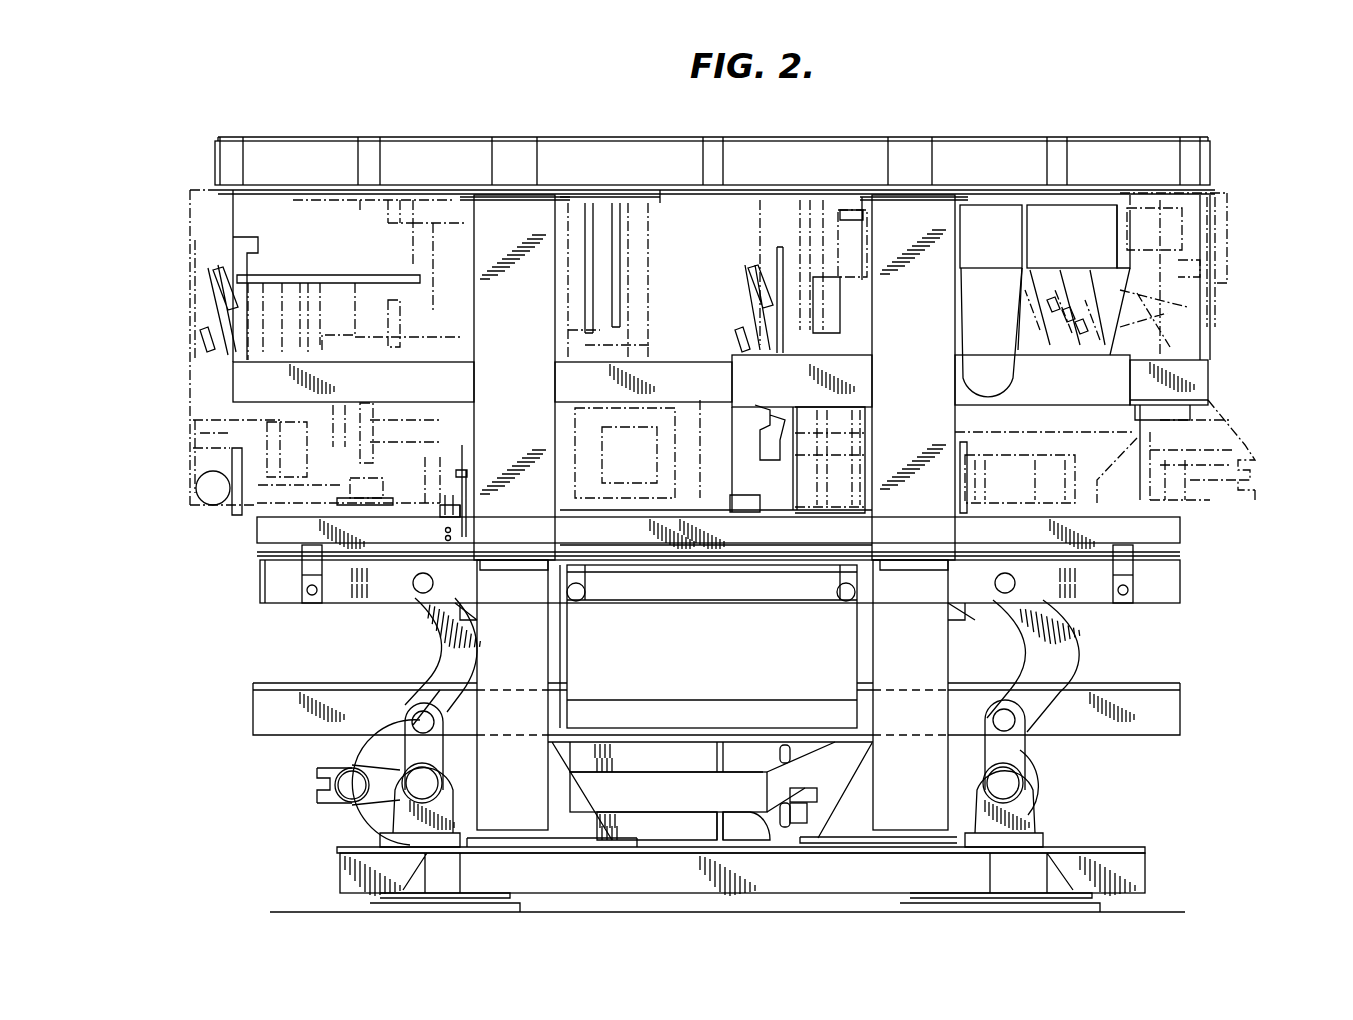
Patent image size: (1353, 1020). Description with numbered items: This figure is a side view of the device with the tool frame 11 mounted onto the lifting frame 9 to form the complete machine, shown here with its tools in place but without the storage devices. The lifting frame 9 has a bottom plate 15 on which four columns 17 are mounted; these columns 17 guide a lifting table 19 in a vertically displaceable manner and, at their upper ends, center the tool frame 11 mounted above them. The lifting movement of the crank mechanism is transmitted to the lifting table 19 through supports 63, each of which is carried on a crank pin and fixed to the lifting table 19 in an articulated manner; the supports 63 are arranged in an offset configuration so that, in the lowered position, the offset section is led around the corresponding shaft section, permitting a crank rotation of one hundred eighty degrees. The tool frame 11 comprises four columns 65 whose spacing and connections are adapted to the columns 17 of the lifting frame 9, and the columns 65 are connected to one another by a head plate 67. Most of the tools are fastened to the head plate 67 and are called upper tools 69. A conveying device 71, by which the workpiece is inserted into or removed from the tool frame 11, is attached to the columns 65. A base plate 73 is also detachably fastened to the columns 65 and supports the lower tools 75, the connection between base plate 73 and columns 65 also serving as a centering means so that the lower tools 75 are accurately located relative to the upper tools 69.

The tool frame 11 is at (352, 134).
The head plate 67 is at (626, 152).
The columns 65 is at (526, 386).
The conveying device 71 is at (1074, 388).
The upper tools 69 is at (1272, 280).
The lower tools 75 is at (1262, 441).
The base plate 73 is at (1166, 536).
The lifting table 19 is at (1160, 583).
The columns 17 is at (524, 640).
The supports 63 is at (455, 638).
The lifting frame 9 is at (1022, 828).
The bottom plate 15 is at (340, 872).